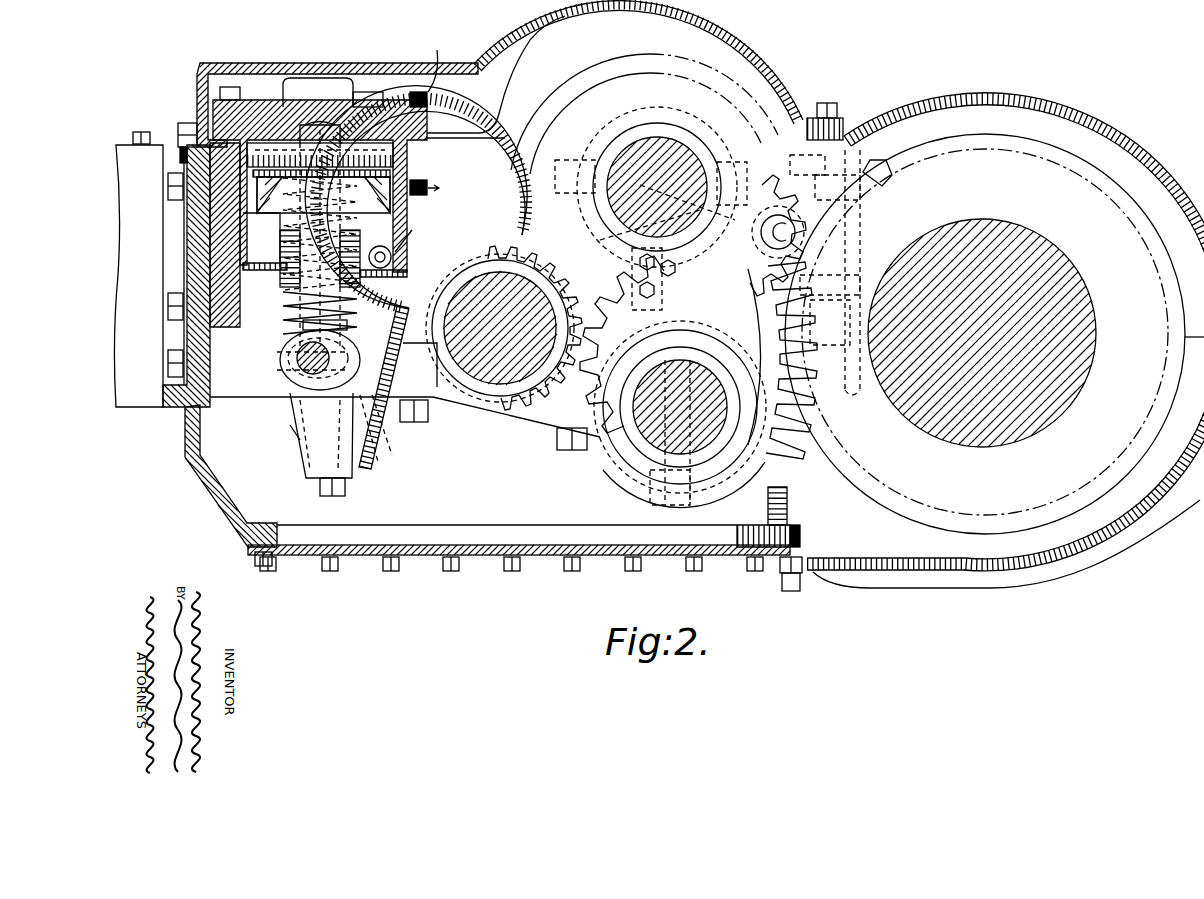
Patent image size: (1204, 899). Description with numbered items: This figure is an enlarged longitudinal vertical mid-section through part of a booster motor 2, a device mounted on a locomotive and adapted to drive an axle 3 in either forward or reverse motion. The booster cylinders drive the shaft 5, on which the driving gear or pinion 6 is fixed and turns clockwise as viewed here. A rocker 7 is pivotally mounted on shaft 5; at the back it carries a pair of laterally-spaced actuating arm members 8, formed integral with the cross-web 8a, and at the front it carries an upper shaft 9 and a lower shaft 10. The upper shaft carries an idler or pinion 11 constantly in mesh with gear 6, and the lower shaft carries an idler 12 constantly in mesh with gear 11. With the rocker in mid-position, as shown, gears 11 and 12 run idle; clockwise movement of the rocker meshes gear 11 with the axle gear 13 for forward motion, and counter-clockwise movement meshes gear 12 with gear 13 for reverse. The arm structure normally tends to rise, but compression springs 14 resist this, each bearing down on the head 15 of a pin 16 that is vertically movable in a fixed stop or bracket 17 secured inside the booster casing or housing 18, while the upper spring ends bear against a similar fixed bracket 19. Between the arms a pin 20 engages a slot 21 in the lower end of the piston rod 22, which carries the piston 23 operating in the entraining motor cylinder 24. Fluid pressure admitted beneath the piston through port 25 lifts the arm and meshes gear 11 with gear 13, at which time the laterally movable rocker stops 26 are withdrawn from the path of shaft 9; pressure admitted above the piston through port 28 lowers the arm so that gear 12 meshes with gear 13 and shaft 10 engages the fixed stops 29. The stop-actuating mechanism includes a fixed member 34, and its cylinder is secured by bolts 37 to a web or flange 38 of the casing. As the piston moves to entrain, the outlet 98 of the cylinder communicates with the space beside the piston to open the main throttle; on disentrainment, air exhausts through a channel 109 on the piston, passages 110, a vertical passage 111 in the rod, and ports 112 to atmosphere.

The booster motor 2 is at (659, 296).
The axle 3 is at (1043, 247).
The shaft 5 is at (485, 378).
The driving gear or pinion 6 is at (537, 393).
The rocker 7 is at (493, 230).
The actuating arm member 8 is at (310, 424).
The cross-web 8a is at (390, 360).
The upper shaft 9 is at (655, 148).
The lower shaft 10 is at (672, 395).
The idler or pinion 11 is at (664, 234).
The idler 12 is at (766, 445).
The axle gear 13 is at (830, 268).
The compression spring 14 is at (353, 300).
The head 15 is at (370, 428).
The pin 16 is at (300, 441).
The fixed stop or bracket 17 is at (287, 377).
The booster casing or housing 18 is at (190, 433).
The fixed bracket 19 is at (283, 145).
The pin 20 is at (298, 354).
The slot 21 is at (287, 362).
The piston rod 22 is at (300, 282).
The piston 23 is at (273, 150).
The entraining motor cylinder 24 is at (243, 232).
The port 25 is at (391, 257).
The laterally movable rocker stop 26 is at (707, 213).
The port 28 is at (428, 100).
The fixed stop 29 is at (660, 290).
The fixed member 34 is at (677, 266).
The bolt 37 is at (803, 190).
The web or flange 38 is at (850, 227).
The outlet 98 is at (412, 196).
The channel 109 is at (407, 157).
The passage 110 is at (367, 172).
The vertical passage 111 is at (340, 218).
The port 112 is at (347, 324).